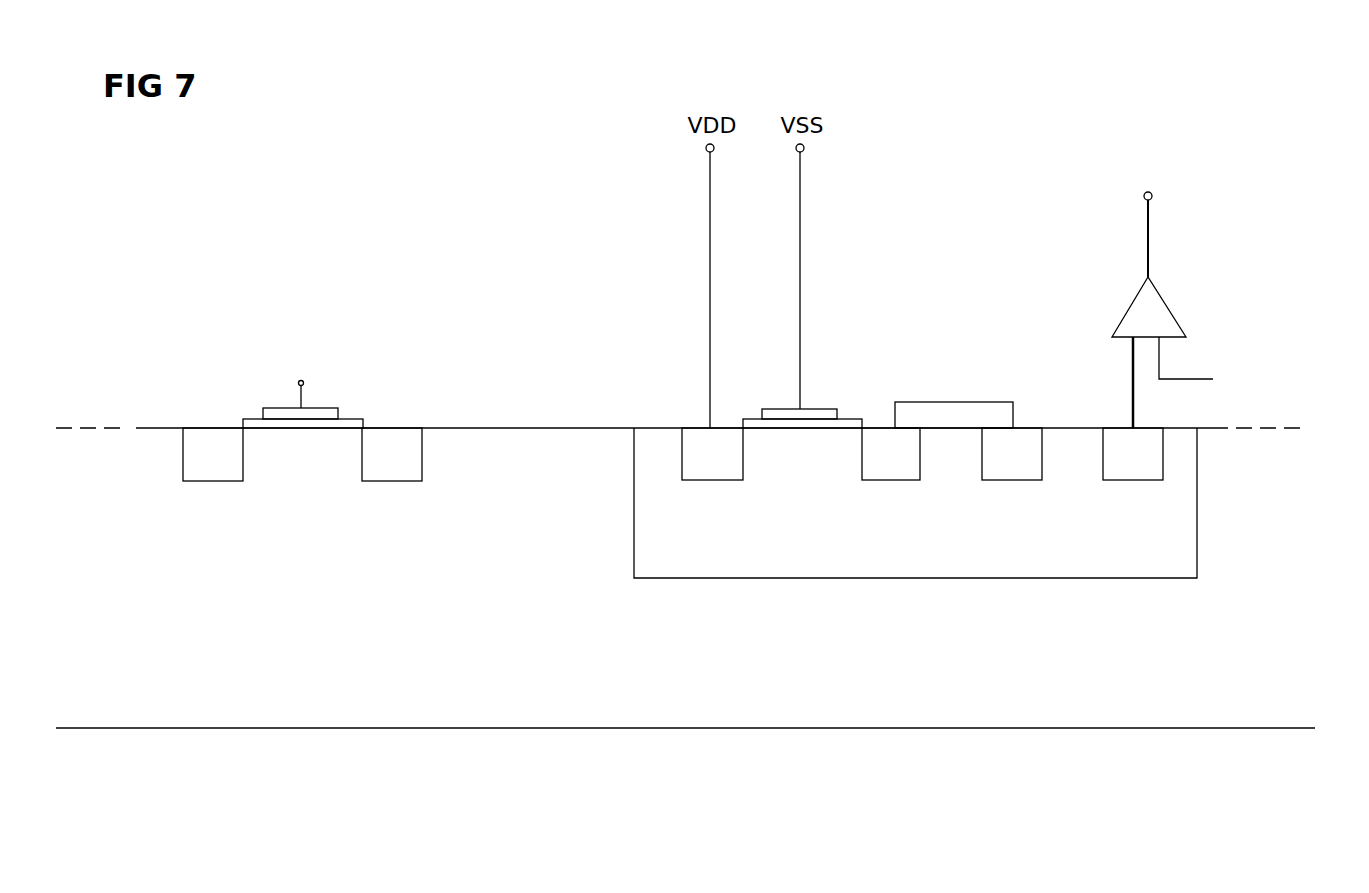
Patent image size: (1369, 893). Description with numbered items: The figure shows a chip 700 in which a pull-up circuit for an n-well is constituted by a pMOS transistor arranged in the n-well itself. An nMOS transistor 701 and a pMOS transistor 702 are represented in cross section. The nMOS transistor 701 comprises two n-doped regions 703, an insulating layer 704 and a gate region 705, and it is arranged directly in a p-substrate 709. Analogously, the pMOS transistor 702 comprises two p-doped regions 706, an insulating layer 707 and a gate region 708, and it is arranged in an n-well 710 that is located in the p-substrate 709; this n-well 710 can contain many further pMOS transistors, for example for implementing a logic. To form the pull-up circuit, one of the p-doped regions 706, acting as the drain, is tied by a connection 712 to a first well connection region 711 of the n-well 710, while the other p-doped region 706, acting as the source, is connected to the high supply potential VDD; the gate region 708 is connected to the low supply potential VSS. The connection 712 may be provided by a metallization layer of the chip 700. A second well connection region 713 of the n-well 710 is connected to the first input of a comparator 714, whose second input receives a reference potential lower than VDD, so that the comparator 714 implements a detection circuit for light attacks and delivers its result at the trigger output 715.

The chip 700 is at (1258, 132).
The nMOS transistor 701 is at (321, 392).
The pMOS transistor 702 is at (780, 424).
The n-doped regions 703 is at (220, 428).
The insulating layer 704 is at (358, 420).
The gate region 705 is at (283, 410).
The p-doped regions 706 is at (700, 428).
The insulating layer 707 is at (850, 420).
The gate region 708 is at (786, 409).
The p-substrate 709 is at (1077, 706).
The n-well 710 is at (1178, 552).
The first well connection region 711 is at (1022, 428).
The connection 712 is at (944, 402).
The second well connection region 713 is at (1150, 418).
The comparator 714 is at (1168, 300).
The trigger terminal 715 is at (1148, 135).